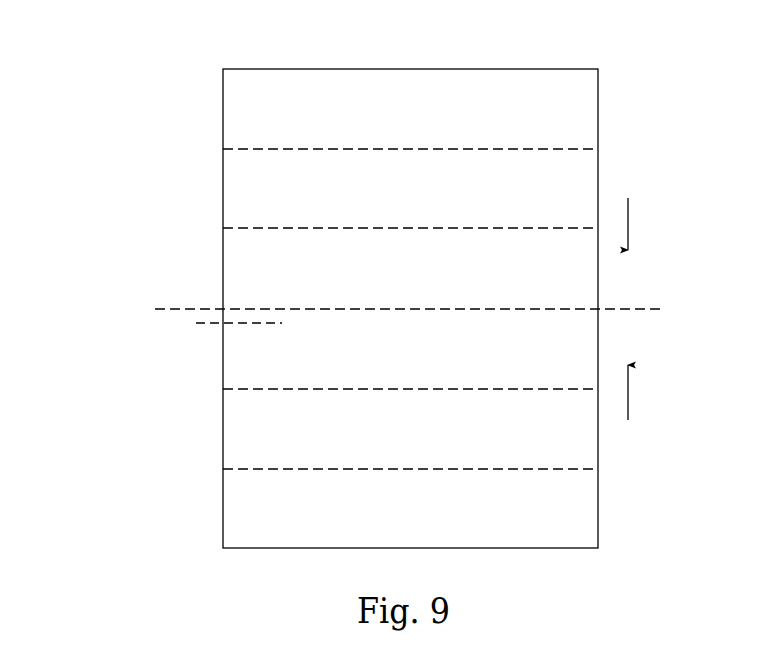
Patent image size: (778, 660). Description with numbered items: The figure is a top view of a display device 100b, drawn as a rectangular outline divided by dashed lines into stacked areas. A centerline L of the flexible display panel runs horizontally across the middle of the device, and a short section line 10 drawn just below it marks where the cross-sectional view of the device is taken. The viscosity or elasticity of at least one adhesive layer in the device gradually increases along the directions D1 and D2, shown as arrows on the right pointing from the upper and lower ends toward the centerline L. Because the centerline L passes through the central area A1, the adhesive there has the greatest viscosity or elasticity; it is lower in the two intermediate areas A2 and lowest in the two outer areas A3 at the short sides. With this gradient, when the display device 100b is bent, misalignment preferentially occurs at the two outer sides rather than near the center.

The display device 100b is at (92, 32).
The area A1 is at (428, 284).
The area A2 is at (428, 203).
The area A3 is at (428, 124).
The centerline L is at (397, 309).
The line 10- 10 is at (196, 324).
The direction D1 is at (627, 210).
The direction D2 is at (627, 407).